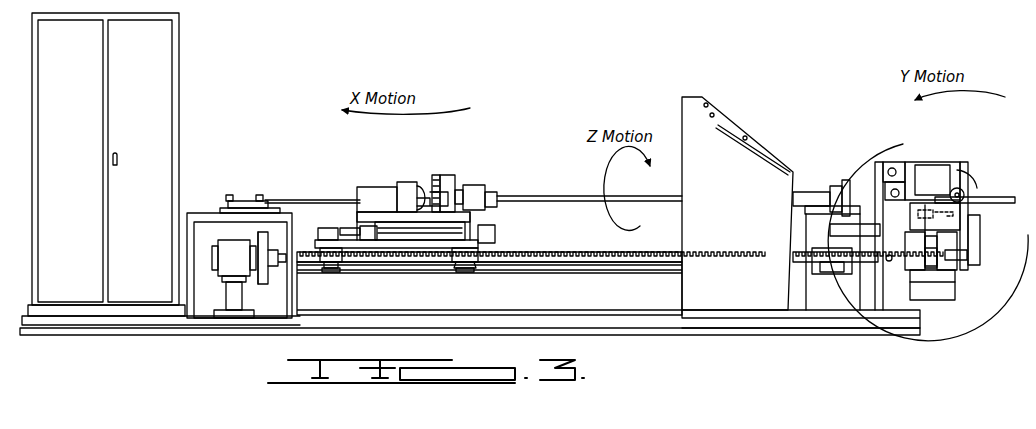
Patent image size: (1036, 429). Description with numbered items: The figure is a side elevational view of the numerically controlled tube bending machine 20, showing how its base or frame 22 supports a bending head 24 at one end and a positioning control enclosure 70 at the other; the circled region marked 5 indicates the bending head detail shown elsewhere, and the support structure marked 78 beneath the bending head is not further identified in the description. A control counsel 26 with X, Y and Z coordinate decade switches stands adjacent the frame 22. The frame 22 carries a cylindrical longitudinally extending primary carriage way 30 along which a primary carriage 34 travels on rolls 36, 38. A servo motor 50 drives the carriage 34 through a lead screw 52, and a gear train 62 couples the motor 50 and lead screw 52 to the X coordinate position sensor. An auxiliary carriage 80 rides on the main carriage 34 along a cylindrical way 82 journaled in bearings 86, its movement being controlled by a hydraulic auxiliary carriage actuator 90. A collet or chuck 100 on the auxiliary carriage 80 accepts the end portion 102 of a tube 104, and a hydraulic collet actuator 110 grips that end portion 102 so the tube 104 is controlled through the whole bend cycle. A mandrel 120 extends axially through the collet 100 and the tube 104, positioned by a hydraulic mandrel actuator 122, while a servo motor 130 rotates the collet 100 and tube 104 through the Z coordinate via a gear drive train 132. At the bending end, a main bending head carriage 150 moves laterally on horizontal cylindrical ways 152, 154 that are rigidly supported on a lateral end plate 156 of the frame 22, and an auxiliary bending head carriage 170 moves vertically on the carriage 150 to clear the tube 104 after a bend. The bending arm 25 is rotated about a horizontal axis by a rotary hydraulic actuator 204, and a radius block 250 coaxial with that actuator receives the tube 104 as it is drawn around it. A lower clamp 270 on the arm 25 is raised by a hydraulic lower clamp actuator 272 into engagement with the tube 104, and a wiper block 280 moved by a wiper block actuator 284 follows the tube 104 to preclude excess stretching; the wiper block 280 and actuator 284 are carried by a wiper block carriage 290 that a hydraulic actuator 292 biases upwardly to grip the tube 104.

The detail circle (FIG. 5 region) 5 is at (928, 338).
The numerically controlled tube bending machine 20 is at (310, 82).
The base or frame 22 is at (664, 330).
The bending head 24 is at (858, 102).
The arm 25 is at (981, 230).
The control counsel 26 is at (801, 212).
The primary carriage way 30 is at (560, 272).
The primary carriage 34 is at (322, 238).
The roll 36 is at (318, 275).
The roll 38 is at (464, 272).
The servo motor 50 is at (240, 236).
The lead screw 52 is at (560, 250).
The gear train 62 is at (265, 286).
The positioning control enclosure 70 is at (106, 164).
The column support 78 is at (836, 305).
The auxiliary carriage 80 is at (486, 232).
The cylindrical way 82 is at (420, 240).
The bearing 86 is at (395, 242).
The hydraulic auxiliary carriage actuator 90 is at (346, 228).
The collet or chuck 100 is at (472, 186).
The end portion 102 is at (510, 197).
The tube 104 is at (540, 194).
The hydraulic collet actuator 110 is at (404, 184).
The mandrel 120 is at (292, 198).
The hydraulic mandrel actuator 122 is at (243, 195).
The servo motor 130 is at (371, 186).
The gear drive train 132 is at (437, 176).
The main bending head carriage 150 is at (910, 160).
The horizontal cylindrical way 152 is at (888, 160).
The horizontal cylindrical way 154 is at (838, 262).
The lateral end plate 156 is at (876, 186).
The auxiliary bending head carriage 170 is at (947, 160).
The rotary hydraulic actuator 204 is at (995, 200).
The radius block 250 is at (966, 190).
The lower clamp 270 is at (962, 212).
The hydraulic lower clamp actuator 272 is at (970, 255).
The wiper block 280 is at (940, 195).
The wiper block actuator 284 is at (930, 228).
The wiper block carriage 290 is at (922, 238).
The hydraulic actuator 292 is at (936, 260).